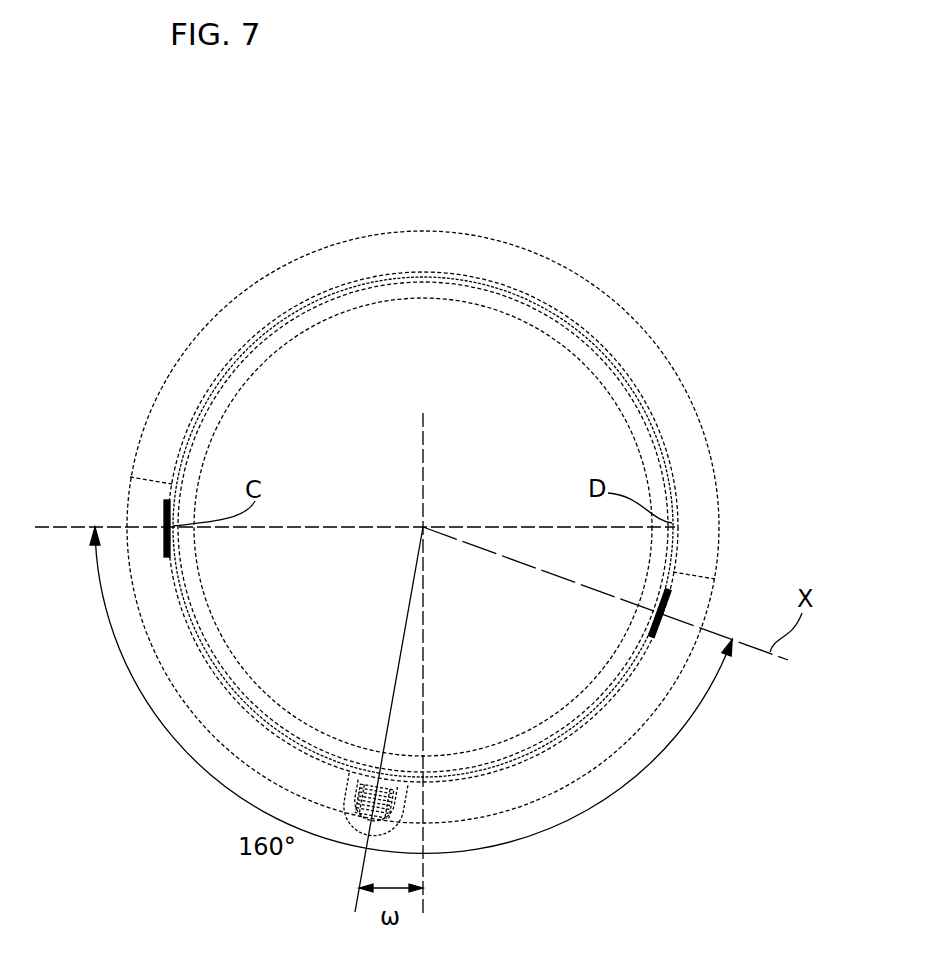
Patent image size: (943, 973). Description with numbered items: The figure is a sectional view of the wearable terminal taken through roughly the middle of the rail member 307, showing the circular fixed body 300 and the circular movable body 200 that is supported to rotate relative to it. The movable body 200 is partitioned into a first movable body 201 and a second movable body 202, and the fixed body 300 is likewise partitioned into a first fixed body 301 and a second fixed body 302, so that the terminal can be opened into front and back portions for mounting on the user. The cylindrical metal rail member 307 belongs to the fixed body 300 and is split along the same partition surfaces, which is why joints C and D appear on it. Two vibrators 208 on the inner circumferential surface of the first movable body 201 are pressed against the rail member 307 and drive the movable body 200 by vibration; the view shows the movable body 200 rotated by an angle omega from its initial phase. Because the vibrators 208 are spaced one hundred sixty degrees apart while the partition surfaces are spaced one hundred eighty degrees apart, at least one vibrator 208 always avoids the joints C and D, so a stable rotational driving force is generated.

The movable body 200 is at (602, 240).
The first movable body 201 is at (240, 762).
The second movable body 202 is at (237, 293).
The vibrator 208 is at (165, 508).
The fixed body 300 is at (262, 632).
The first fixed body 301 is at (303, 720).
The second fixed body 302 is at (268, 358).
The rail member 307 is at (598, 705).